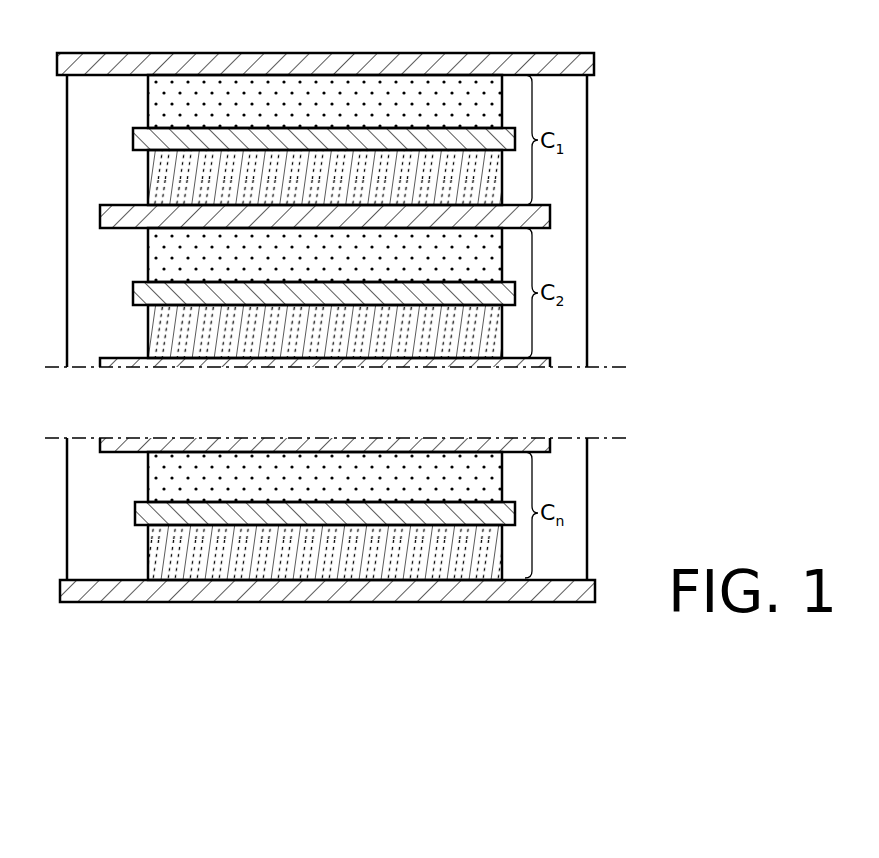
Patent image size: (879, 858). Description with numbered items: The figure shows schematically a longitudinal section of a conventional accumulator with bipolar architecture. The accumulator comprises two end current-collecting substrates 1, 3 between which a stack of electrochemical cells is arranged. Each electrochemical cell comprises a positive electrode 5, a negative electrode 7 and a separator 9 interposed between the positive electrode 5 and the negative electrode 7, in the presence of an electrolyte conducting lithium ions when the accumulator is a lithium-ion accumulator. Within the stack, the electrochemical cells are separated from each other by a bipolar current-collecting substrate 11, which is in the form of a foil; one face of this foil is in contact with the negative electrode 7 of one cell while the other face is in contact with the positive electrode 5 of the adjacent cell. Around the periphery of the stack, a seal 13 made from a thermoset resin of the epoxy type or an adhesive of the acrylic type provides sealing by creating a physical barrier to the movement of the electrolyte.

The end current-collecting substrate 1 is at (592, 60).
The end current-collecting substrate 3 is at (592, 583).
The positive electrode 5 is at (150, 98).
The negative electrode 7 is at (160, 175).
The separator 9 is at (135, 140).
The bipolar current-collecting substrate 11 is at (550, 215).
The seal 13 is at (572, 100).